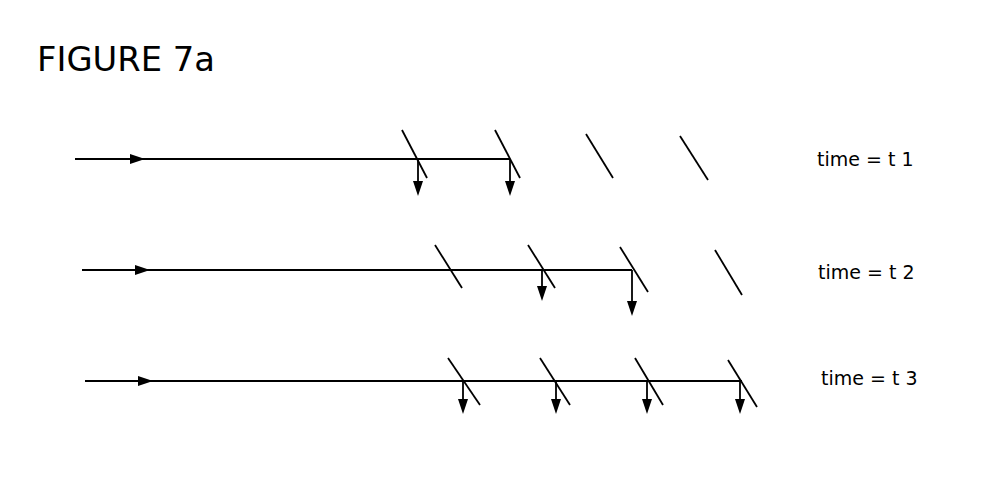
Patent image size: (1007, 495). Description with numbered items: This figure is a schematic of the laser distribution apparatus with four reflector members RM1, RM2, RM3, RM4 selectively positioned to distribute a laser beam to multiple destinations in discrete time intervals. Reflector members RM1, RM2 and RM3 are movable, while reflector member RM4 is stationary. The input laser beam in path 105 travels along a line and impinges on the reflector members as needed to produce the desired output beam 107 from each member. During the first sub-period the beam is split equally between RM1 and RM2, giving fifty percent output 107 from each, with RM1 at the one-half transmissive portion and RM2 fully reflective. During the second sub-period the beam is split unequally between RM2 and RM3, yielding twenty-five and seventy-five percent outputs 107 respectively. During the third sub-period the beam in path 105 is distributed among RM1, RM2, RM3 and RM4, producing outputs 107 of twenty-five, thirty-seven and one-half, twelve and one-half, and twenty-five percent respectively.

The input laser beam path 105 is at (172, 159).
The output beam 107 is at (583, 303).
The first reflector member RM1 is at (454, 264).
The second reflector member RM2 is at (546, 264).
The third reflector member RM3 is at (639, 264).
The fourth reflector member RM4 is at (734, 265).